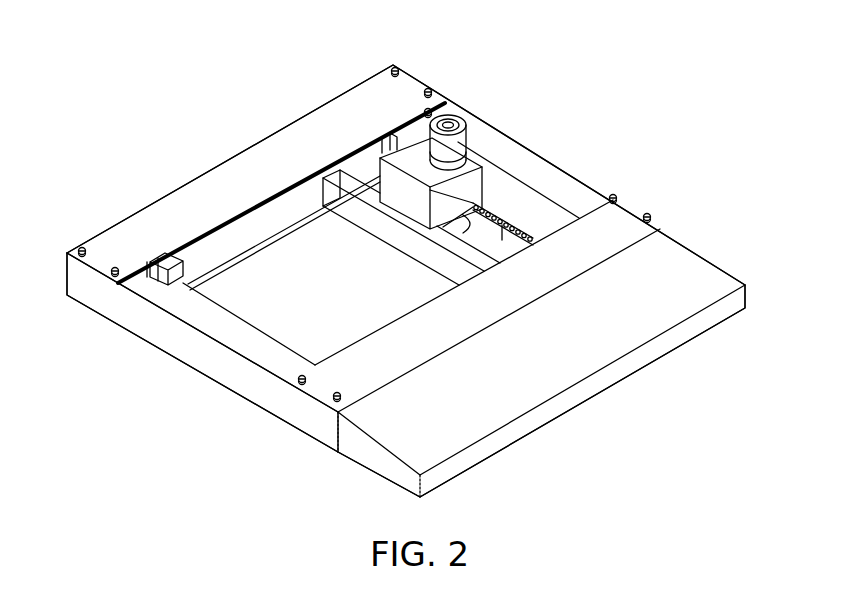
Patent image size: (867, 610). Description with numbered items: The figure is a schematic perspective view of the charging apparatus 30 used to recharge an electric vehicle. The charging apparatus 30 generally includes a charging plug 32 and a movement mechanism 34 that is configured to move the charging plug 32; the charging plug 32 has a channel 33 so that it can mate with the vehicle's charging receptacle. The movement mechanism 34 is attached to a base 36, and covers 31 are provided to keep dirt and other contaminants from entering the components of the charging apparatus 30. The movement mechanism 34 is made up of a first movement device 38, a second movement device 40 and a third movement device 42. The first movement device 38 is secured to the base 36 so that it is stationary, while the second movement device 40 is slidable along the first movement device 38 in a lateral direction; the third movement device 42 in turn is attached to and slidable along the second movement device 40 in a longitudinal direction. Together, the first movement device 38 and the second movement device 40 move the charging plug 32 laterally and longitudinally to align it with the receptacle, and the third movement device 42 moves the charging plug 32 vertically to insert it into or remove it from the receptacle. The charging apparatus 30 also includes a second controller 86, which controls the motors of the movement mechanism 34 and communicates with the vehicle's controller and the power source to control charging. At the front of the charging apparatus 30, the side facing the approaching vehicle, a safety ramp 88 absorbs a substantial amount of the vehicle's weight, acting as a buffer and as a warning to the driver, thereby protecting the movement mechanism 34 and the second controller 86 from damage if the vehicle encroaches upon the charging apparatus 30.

The charging apparatus 30 is at (406, 269).
The covers 31 is at (215, 177).
The charging plug 32 is at (442, 119).
The channel 33 is at (454, 121).
The movement mechanism 34 is at (462, 282).
The base 36 is at (98, 307).
The first movement device 38 is at (263, 244).
The second movement device 40 is at (411, 241).
The third movement device 42 is at (478, 180).
The second controller 86 is at (200, 318).
The safety ramp 88 is at (692, 265).